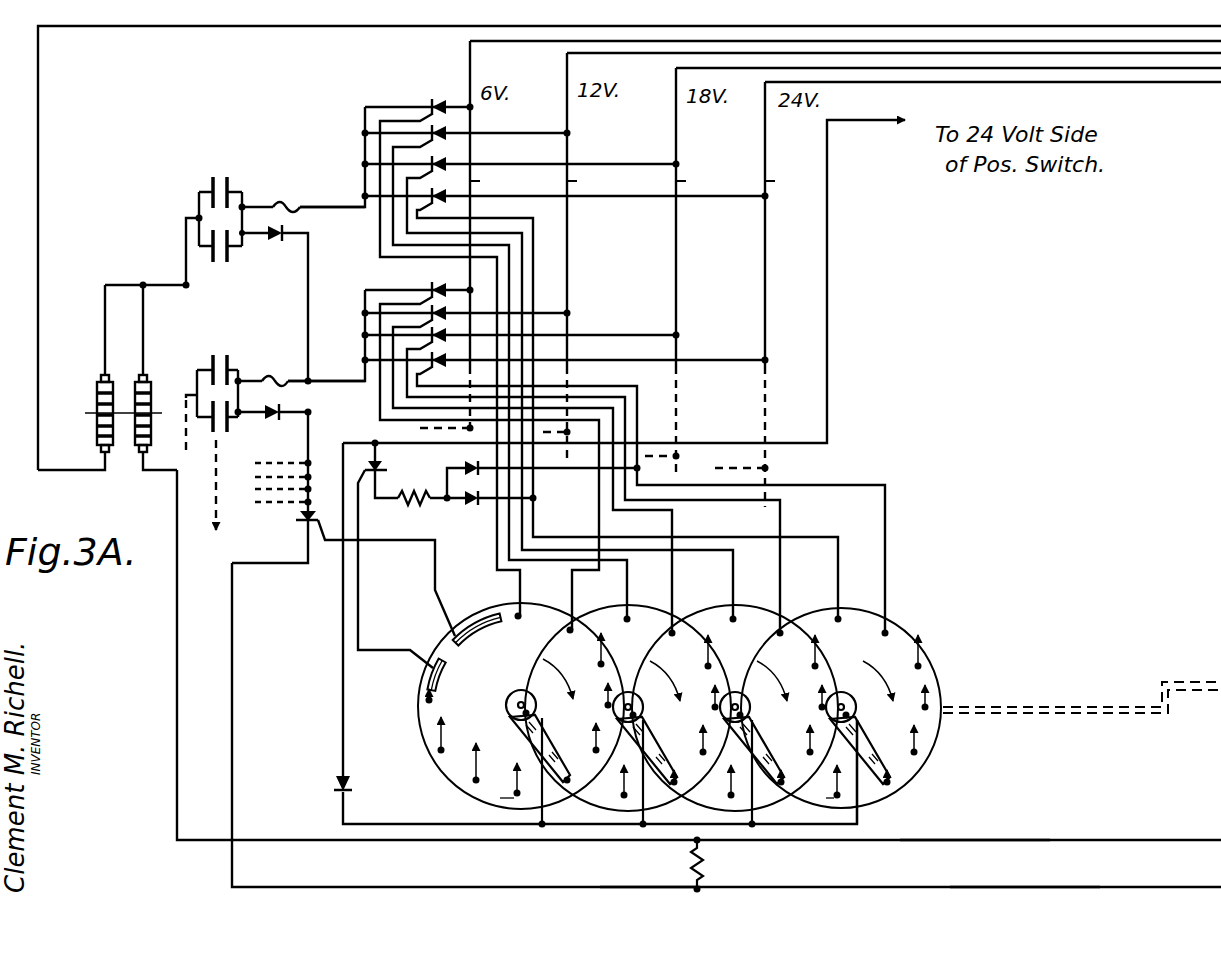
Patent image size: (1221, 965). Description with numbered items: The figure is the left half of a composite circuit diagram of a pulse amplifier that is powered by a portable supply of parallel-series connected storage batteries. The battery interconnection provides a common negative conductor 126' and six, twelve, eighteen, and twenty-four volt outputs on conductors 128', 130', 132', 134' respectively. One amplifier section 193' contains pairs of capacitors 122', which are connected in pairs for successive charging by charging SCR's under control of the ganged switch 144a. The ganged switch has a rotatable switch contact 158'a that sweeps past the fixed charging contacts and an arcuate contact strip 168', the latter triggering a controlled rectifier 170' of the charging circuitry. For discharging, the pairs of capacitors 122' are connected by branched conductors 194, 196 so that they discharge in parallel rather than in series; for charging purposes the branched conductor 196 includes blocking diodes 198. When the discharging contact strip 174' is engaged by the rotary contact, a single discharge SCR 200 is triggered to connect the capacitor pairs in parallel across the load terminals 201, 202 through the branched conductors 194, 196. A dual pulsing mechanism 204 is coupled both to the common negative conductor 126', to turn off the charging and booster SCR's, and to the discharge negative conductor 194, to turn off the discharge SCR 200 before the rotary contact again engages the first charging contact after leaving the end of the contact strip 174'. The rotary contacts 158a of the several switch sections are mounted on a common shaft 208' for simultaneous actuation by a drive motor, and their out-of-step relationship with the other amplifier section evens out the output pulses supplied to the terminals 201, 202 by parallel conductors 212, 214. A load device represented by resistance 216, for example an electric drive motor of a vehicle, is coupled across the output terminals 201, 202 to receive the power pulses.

The capacitors 122' is at (253, 227).
The common negative conductor 126' is at (107, 395).
The 6 volt output conductor 128' is at (498, 182).
The 12 volt output conductor 130' is at (595, 182).
The 18 volt output conductor 132' is at (705, 182).
The 24 volt output conductor 134' is at (793, 182).
The ganged switch 144a is at (650, 670).
The rotary switch contact 158'a is at (519, 745).
The rotary switch contact 158a is at (865, 704).
The contact strip 168' is at (403, 690).
The silicon controlled rectifier 170' is at (485, 617).
The discharging contact strip 174' is at (443, 630).
The amplifier section 193' is at (586, 346).
The branched conductor 194 is at (185, 280).
The branched conductor 196 is at (308, 438).
The blocking diodes 198 is at (284, 240).
The discharge SCR 200 is at (297, 520).
The load terminal 201 is at (690, 843).
The load terminal 202 is at (702, 888).
The pulsing mechanism 204 is at (118, 385).
The common shaft 208' is at (1082, 715).
The parallel conductor 212 is at (977, 842).
The parallel conductor 214 is at (1044, 889).
The load device 216 is at (702, 856).